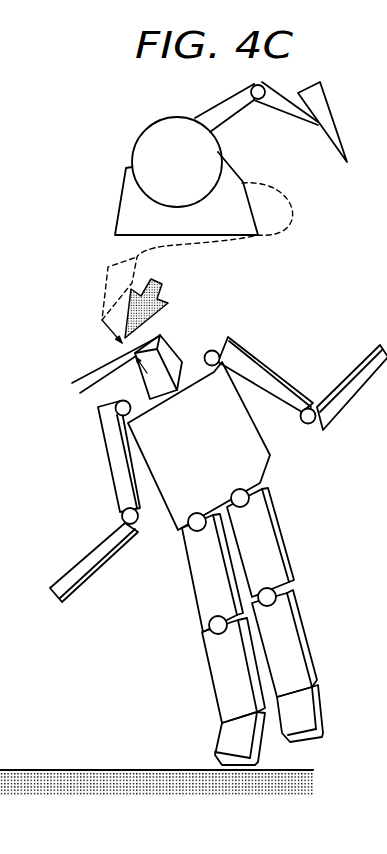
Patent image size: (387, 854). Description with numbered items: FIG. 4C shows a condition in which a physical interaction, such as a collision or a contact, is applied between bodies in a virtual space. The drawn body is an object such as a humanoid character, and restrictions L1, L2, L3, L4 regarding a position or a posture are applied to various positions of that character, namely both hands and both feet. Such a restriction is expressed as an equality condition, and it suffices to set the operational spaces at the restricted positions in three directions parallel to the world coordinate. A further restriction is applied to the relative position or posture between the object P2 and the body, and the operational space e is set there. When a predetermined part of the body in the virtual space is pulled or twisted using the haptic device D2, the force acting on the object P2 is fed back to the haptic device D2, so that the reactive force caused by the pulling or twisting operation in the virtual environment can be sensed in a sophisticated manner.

The restriction L1 is at (352, 346).
The restriction L2 is at (325, 709).
The restriction L3 is at (217, 721).
The restriction L4 is at (80, 557).
The object P2 is at (160, 308).
The haptic device D2 is at (197, 251).
The operational space e is at (116, 356).